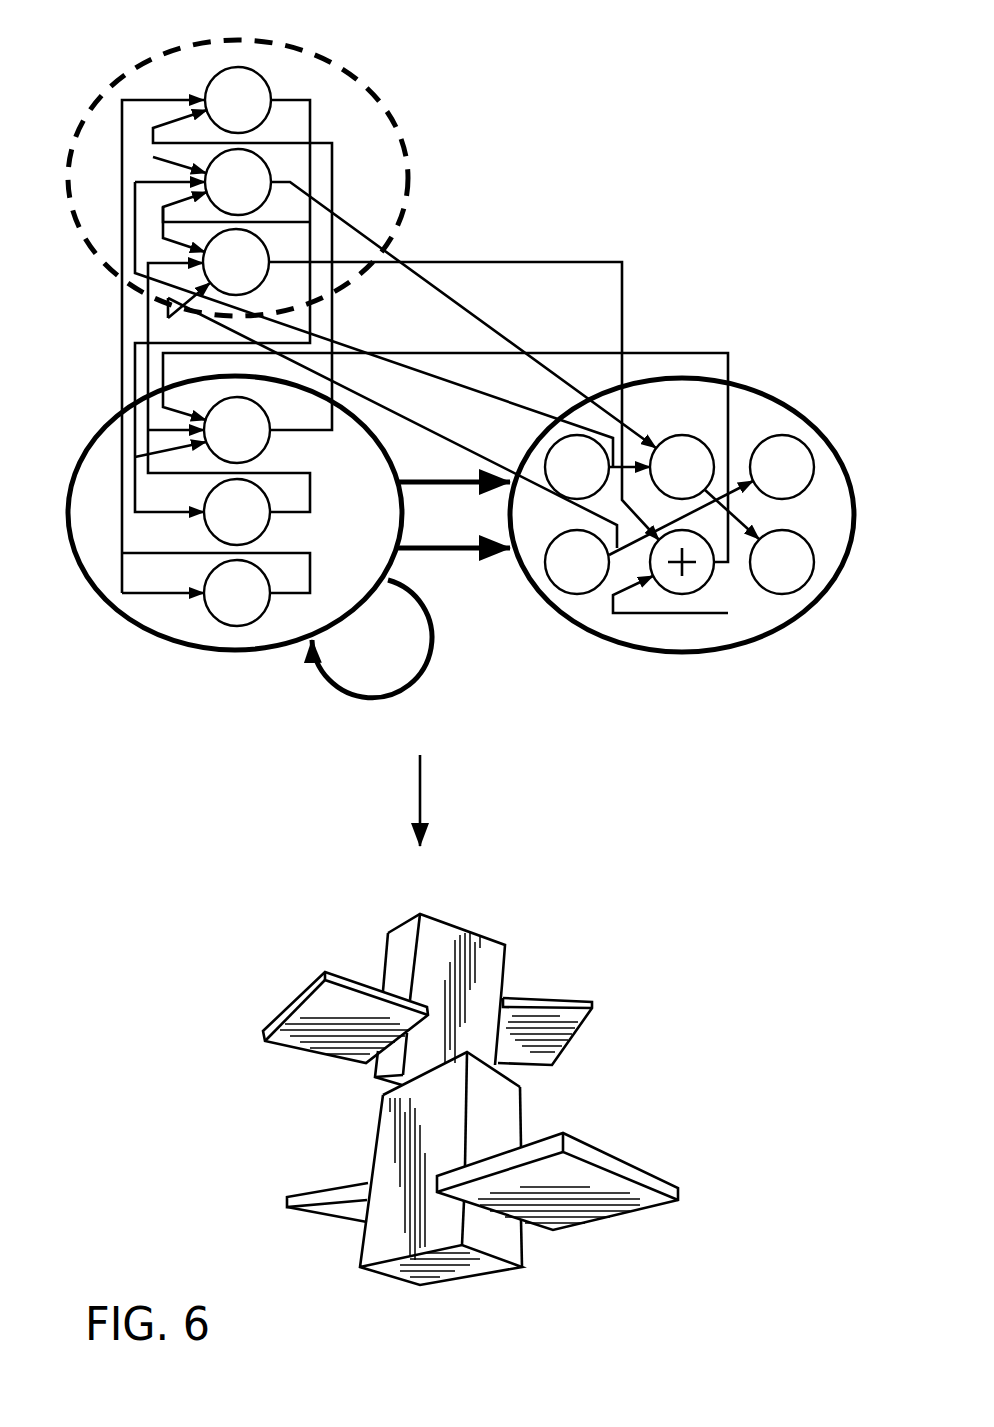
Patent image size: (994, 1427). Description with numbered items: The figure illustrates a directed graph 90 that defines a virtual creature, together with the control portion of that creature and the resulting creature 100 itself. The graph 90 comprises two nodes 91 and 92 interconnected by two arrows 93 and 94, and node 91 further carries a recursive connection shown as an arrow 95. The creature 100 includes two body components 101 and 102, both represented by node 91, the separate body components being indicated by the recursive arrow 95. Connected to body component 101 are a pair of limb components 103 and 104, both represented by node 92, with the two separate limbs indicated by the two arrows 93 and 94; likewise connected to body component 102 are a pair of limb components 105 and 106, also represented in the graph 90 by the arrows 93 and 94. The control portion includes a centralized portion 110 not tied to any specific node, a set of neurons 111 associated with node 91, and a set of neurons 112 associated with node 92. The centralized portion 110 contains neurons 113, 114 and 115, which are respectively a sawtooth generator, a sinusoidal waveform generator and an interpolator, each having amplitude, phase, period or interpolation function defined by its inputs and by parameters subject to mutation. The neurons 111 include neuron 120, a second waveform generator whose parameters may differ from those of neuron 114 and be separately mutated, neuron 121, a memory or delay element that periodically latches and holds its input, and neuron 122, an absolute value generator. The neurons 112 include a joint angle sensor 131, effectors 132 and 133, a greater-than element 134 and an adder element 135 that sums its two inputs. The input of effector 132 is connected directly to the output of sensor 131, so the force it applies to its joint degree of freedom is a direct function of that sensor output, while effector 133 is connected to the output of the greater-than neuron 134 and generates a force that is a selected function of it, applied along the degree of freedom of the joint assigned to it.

The graph 90 is at (594, 147).
The node 91 is at (133, 625).
The node 92 is at (790, 408).
The arrow 93 is at (451, 564).
The arrow 94 is at (462, 487).
The recursive arrow 95 is at (417, 677).
The virtual creature 100 is at (419, 1106).
The body component 101 is at (463, 924).
The body component 102 is at (430, 1280).
The limb component 103 is at (305, 990).
The limb component 104 is at (575, 998).
The limb component 105 is at (320, 1188).
The limb component 106 is at (602, 1143).
The centralized portion 110 is at (158, 58).
The set of neurons 111 is at (95, 484).
The set of neurons 112 is at (750, 409).
The neuron 113 is at (238, 66).
The neuron 114 is at (266, 160).
The neuron 115 is at (266, 283).
The neuron 120 is at (271, 448).
The neuron 121 is at (271, 528).
The neuron 122 is at (239, 627).
The sensor 131 is at (550, 586).
The effector 132 is at (546, 450).
The effector 133 is at (803, 588).
The neuron 134 is at (690, 435).
The neuron 135 is at (663, 591).